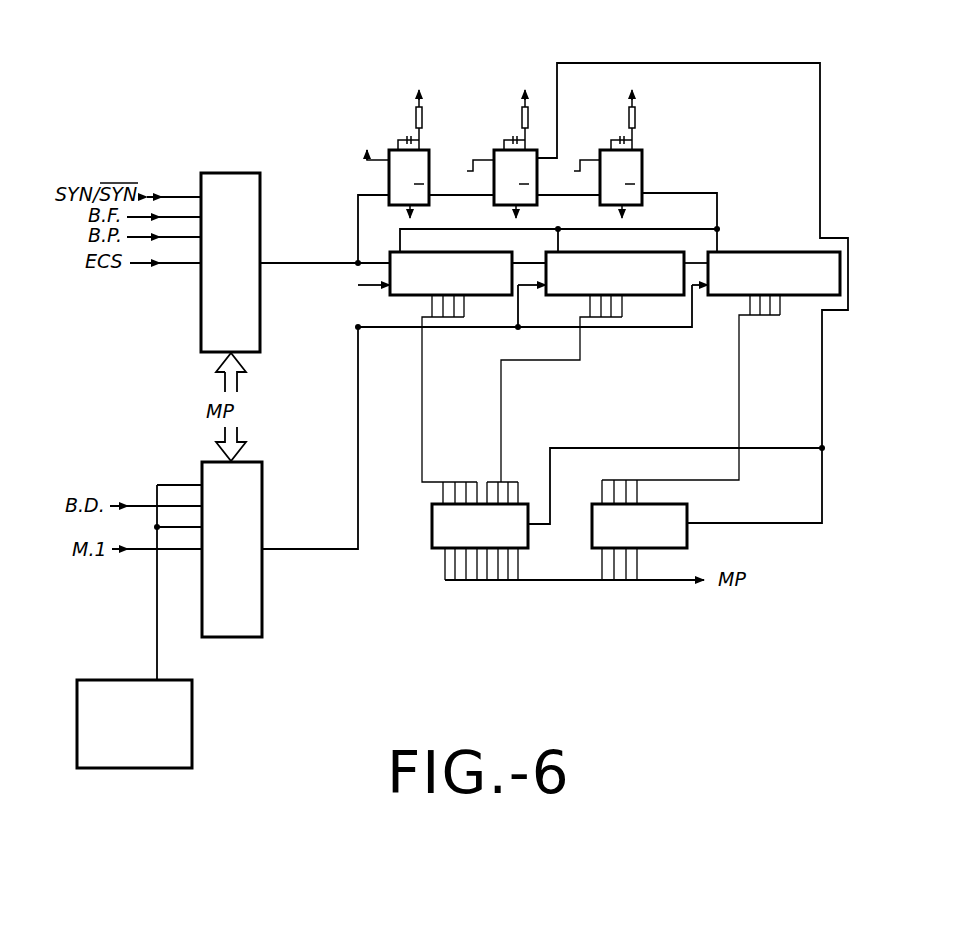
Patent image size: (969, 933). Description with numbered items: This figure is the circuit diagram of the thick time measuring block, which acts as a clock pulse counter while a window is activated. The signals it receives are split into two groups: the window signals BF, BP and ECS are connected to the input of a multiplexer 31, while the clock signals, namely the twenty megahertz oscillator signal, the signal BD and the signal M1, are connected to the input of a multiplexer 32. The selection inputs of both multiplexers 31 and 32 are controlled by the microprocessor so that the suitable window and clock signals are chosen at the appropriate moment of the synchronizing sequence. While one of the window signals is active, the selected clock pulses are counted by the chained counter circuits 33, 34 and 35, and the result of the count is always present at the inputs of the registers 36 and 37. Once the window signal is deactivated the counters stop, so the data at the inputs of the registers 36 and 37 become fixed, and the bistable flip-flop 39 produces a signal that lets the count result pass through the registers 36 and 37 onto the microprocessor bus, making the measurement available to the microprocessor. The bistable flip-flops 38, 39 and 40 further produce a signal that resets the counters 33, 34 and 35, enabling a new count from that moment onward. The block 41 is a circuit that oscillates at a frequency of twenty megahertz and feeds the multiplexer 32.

The multiplexer 31 is at (206, 300).
The multiplexer 32 is at (250, 612).
The counter circuit 33 is at (412, 295).
The counter circuit 34 is at (640, 296).
The counter circuit 35 is at (775, 252).
The register 36 is at (432, 545).
The register 37 is at (688, 538).
The bistable flip-flop 38 is at (422, 157).
The bistable flip-flop 39 is at (540, 150).
The bistable flip-flop 40 is at (642, 160).
The oscillator circuit 41 is at (142, 743).